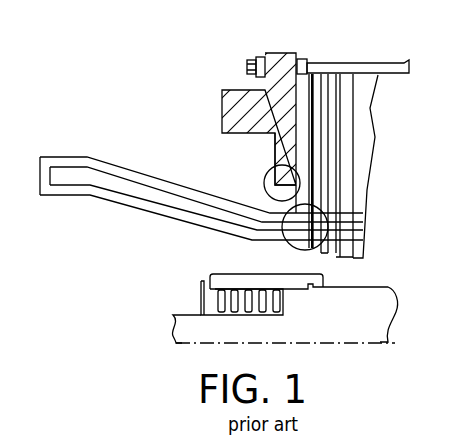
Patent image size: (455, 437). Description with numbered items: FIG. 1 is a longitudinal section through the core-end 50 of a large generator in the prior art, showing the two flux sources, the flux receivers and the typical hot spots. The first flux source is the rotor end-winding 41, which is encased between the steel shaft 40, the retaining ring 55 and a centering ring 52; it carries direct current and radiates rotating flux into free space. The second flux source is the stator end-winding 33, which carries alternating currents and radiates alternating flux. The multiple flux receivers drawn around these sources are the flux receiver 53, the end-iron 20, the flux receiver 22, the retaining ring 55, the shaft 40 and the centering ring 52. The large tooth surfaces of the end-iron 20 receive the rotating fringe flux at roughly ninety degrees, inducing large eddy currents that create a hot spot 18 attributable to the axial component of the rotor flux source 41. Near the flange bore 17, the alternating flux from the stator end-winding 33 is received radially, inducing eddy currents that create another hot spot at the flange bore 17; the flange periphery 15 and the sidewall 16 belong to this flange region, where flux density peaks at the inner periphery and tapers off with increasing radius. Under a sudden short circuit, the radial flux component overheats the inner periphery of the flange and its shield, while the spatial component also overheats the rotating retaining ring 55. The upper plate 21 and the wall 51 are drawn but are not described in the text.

The flange periphery 15 is at (238, 133).
The sidewall 16 is at (275, 153).
The flange bore 17 is at (267, 174).
The hot spot 18 is at (312, 245).
The end-iron 20 is at (327, 250).
The top plate 21 is at (410, 67).
The flux receiver 22 is at (303, 95).
The stator end-winding 33 is at (133, 171).
The steel shaft 40 is at (201, 316).
The rotor end-winding 41 is at (218, 307).
The core-end 50 is at (377, 117).
The stack housing wall 51 is at (370, 178).
The centering ring 52 is at (201, 307).
The flux receiver 53 is at (221, 107).
The retaining ring 55 is at (215, 273).